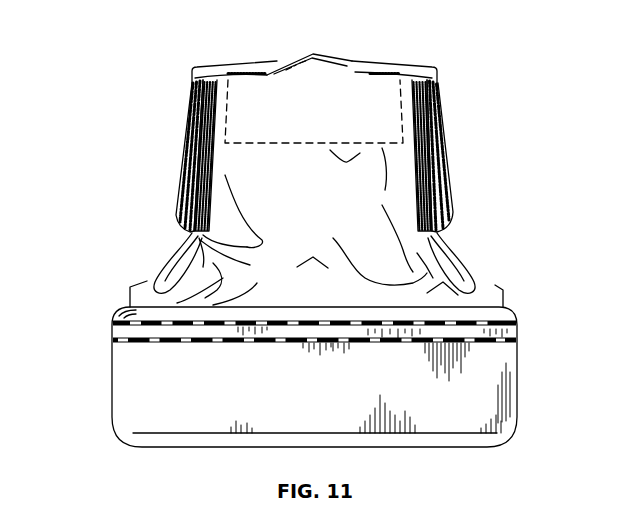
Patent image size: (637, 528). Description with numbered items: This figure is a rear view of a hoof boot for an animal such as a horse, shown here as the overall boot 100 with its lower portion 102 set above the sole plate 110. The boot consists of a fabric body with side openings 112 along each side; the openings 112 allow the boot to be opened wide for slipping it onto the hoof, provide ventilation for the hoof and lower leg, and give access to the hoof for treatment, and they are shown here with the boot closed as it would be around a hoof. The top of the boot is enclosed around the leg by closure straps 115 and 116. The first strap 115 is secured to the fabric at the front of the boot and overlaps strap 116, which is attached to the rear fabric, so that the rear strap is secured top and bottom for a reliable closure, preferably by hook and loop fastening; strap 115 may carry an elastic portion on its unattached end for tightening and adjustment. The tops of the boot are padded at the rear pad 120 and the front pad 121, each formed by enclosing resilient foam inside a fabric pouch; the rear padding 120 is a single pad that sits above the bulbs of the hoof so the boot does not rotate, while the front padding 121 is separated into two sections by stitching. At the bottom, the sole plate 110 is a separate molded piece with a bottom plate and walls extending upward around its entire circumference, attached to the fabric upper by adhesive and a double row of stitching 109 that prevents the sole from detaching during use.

The article 100 is at (102, 74).
The lower body portion 102 is at (545, 299).
The double row of stitching 109 is at (113, 323).
The sole plate 110 is at (317, 415).
The side opening 112 is at (178, 267).
The first strap 115 is at (177, 204).
The second strap 116 is at (189, 148).
The rear pad 120 is at (360, 96).
The front pad 121 is at (313, 53).